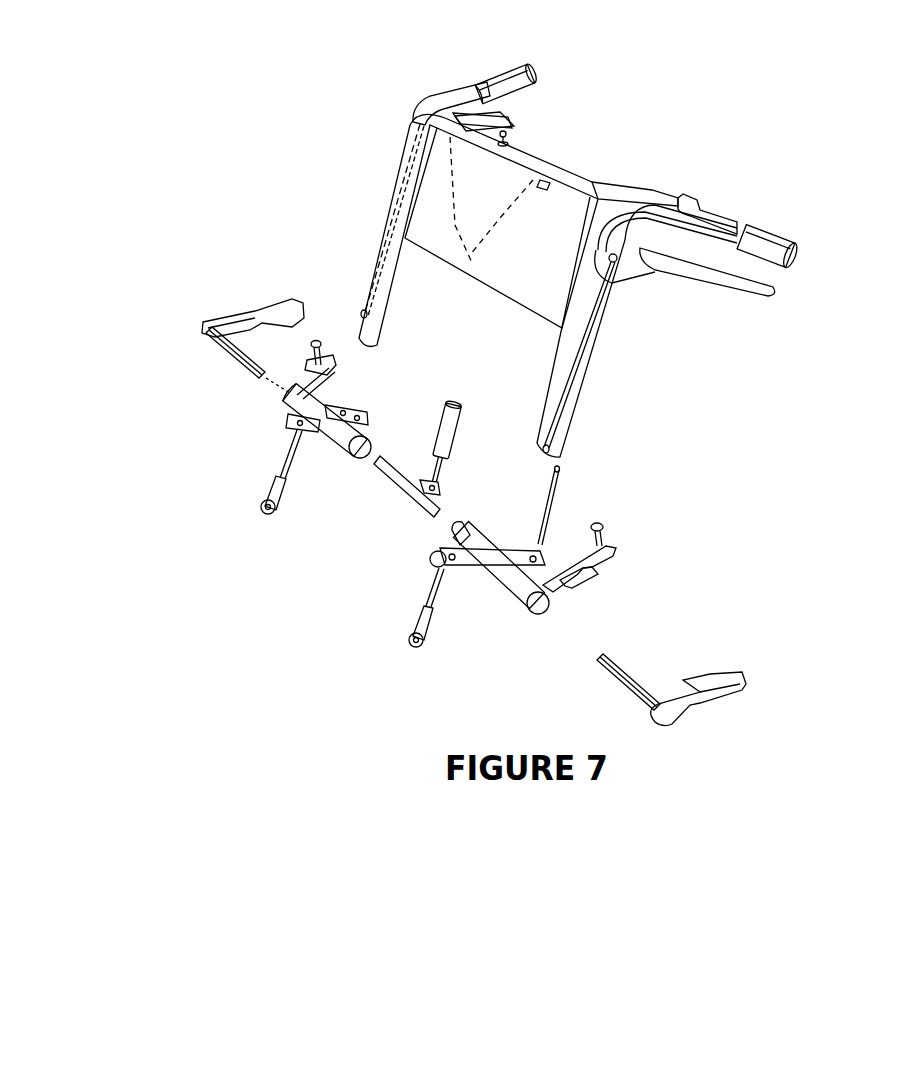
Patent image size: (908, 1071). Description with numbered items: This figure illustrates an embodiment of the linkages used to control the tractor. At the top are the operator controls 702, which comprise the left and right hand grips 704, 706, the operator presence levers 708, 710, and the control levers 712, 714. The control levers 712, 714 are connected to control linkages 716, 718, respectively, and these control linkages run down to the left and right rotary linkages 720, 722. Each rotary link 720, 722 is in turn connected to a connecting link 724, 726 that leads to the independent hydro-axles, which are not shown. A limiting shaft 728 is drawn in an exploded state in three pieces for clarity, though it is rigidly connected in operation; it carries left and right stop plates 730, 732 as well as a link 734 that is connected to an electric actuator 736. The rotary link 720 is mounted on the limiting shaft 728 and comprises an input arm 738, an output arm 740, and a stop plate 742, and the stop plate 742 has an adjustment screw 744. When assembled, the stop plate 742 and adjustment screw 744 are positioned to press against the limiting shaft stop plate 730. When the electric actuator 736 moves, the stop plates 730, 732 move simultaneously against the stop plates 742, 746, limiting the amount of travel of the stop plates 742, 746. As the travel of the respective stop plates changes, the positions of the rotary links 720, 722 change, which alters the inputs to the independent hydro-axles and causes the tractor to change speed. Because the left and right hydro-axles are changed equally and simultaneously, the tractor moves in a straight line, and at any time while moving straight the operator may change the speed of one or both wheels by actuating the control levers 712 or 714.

The operator controls 702 is at (505, 135).
The hand grip 704 is at (797, 240).
The hand grip 706 is at (533, 72).
The operator presence lever 708 is at (722, 230).
The operator presence lever 710 is at (432, 92).
The control lever 712 is at (703, 282).
The control lever 714 is at (515, 123).
The control linkage 716 is at (560, 482).
The control linkage 718 is at (377, 338).
The rotary linkage 720 is at (532, 598).
The rotary linkage 722 is at (318, 447).
The connecting link 724 is at (407, 638).
The connecting link 726 is at (262, 512).
The limiting shaft 728 is at (637, 670).
The stop plate 730 is at (713, 670).
The stop plate 732 is at (270, 312).
The link 734 is at (428, 482).
The electric actuator 736 is at (462, 432).
The input arm 738 is at (557, 550).
The output arm 740 is at (478, 530).
The stop plate 742 is at (567, 576).
The adjustment screw 744 is at (592, 534).
The stop plate 746 is at (318, 342).